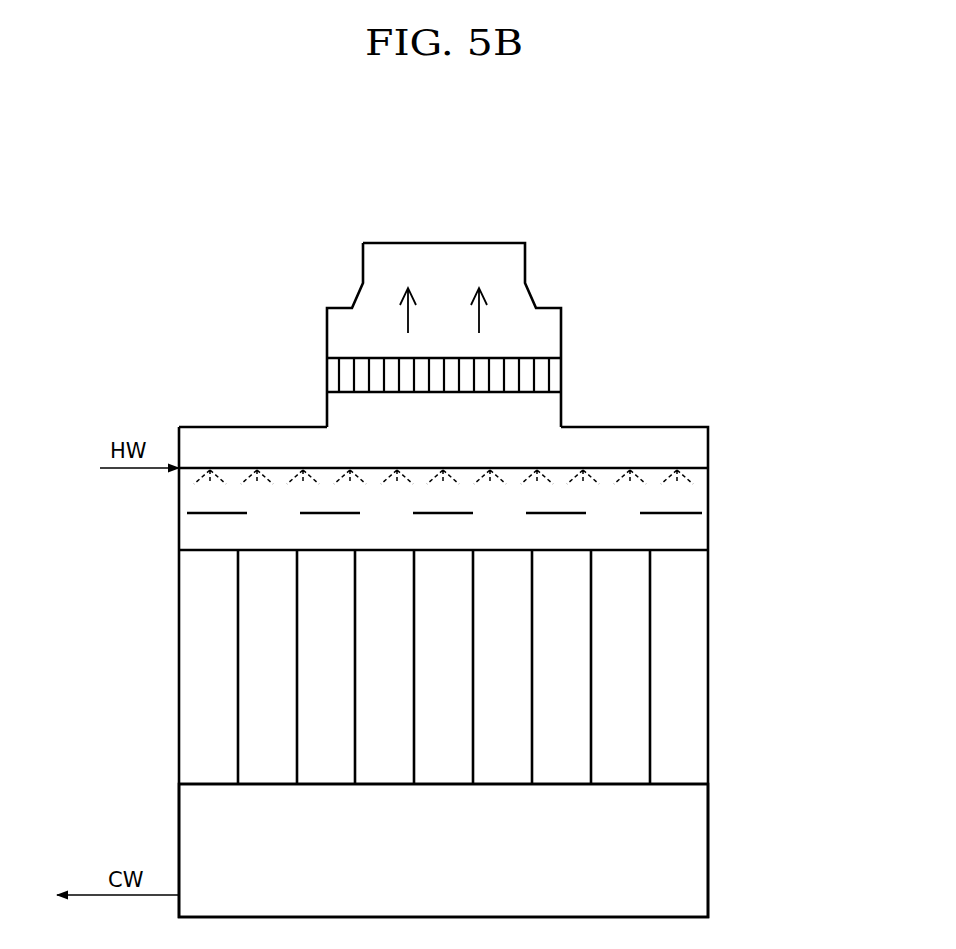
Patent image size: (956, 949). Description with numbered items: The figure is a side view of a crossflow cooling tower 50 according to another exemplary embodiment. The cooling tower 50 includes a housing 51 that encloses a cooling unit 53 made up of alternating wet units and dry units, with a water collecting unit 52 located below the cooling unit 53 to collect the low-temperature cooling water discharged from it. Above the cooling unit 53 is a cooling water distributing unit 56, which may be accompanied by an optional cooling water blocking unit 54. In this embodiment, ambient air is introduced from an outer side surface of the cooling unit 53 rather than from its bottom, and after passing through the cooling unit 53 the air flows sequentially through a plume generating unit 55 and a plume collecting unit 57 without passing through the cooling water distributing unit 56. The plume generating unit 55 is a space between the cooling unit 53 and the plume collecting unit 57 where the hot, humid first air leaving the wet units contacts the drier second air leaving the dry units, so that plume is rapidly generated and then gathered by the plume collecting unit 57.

The cooling tower 50 is at (663, 227).
The housing 51 is at (179, 691).
The water collecting unit 52 is at (673, 858).
The cooling unit 53 is at (713, 553).
The cooling water blocking unit 54 is at (692, 510).
The plume generating unit 55 is at (423, 488).
The cooling water distributing unit 56 is at (655, 465).
The plume collecting unit 57 is at (565, 370).